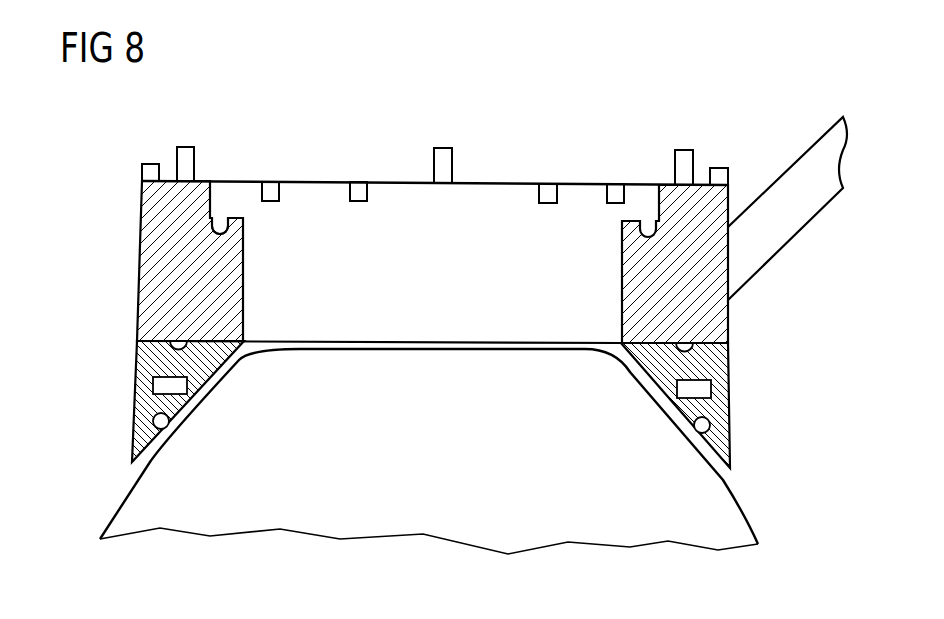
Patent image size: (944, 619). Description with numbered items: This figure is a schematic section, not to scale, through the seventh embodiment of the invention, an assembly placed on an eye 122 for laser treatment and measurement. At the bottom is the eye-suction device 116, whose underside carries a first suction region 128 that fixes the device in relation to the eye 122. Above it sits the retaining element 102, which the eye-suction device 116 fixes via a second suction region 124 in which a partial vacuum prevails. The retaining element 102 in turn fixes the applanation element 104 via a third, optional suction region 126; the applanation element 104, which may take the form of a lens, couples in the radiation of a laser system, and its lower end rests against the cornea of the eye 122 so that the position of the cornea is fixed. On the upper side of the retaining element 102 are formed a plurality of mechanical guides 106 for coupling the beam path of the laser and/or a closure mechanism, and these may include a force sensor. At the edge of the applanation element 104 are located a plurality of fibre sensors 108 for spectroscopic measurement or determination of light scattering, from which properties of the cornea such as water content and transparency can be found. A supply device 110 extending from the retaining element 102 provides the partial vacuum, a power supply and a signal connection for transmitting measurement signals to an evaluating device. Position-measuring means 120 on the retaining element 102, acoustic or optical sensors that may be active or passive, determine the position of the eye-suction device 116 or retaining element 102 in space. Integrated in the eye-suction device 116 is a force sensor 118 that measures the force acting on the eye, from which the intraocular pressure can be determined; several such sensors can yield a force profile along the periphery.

The retaining element 102 is at (718, 322).
The applanation element 104 is at (483, 228).
The mechanical guides 106 is at (187, 153).
The fibre sensors 108 is at (358, 182).
The supply device 110 is at (776, 243).
The eye-suction device 116 is at (719, 417).
The force sensor 118 is at (160, 384).
The position-measuring means 120 is at (152, 170).
The eye 122 is at (127, 510).
The second suction region 124 is at (172, 344).
The third suction region 126 is at (222, 225).
The first suction region 128 is at (163, 421).